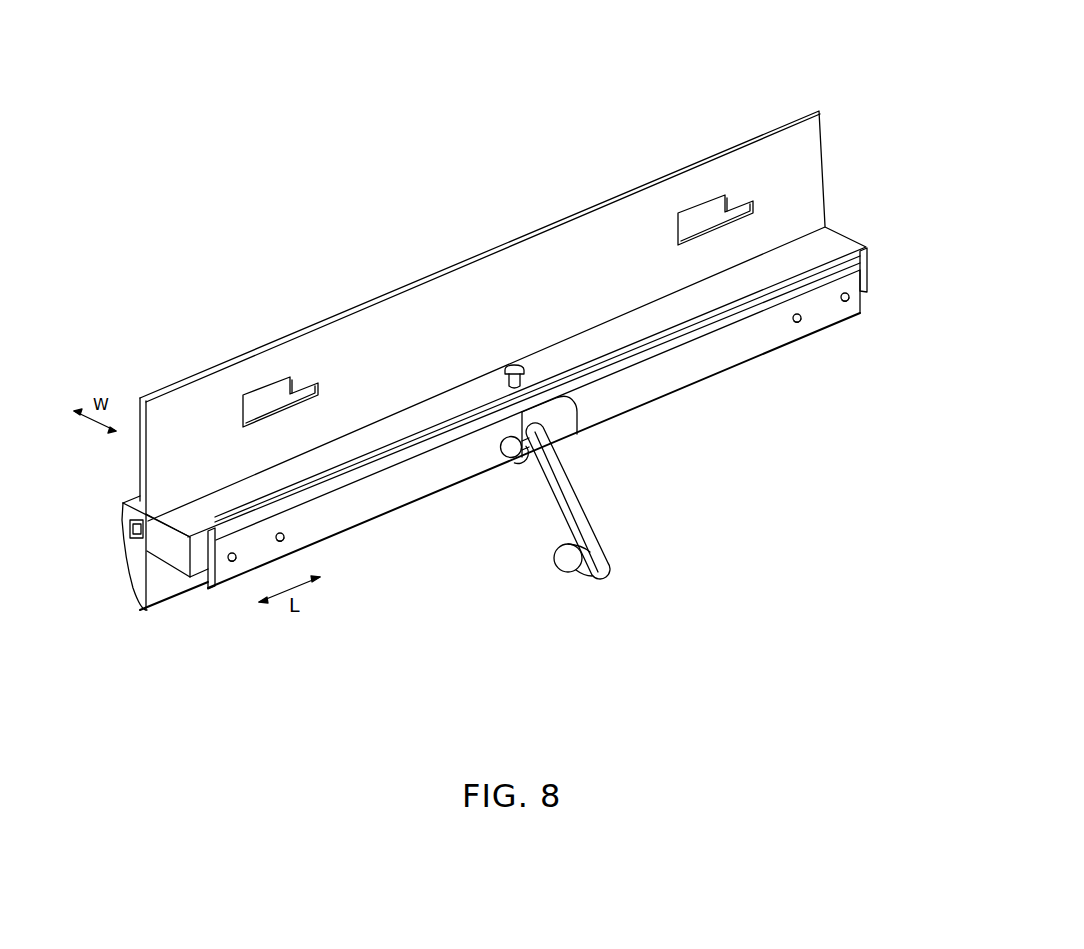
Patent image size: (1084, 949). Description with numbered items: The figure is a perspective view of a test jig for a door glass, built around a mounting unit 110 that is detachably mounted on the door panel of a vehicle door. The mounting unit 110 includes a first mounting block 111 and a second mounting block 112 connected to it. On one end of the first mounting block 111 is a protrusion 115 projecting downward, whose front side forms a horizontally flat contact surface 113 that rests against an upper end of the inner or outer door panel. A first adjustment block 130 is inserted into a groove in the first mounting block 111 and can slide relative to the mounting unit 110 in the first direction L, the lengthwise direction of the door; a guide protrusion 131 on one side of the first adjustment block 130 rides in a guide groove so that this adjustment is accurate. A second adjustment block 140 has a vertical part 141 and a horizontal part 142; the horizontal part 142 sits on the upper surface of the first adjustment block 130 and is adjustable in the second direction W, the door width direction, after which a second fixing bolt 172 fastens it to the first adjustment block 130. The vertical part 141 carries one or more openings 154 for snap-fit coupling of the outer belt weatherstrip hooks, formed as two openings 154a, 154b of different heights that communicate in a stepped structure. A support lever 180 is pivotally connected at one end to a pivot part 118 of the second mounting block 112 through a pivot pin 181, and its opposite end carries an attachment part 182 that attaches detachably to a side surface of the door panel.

The mounting unit 110 is at (452, 474).
The first mounting block 111 is at (128, 517).
The second mounting block 112 is at (232, 577).
The contact surface 113 is at (157, 606).
The protrusion 115 is at (135, 573).
The pivot part 118 is at (565, 440).
The first adjustment block 130 is at (180, 566).
The guide protrusion 131 is at (122, 540).
The second adjustment block 140 is at (552, 360).
The vertical part 141 is at (817, 187).
The horizontal part 142 is at (830, 240).
The openings 154 is at (486, 223).
The opening 154a is at (265, 402).
The opening 154b is at (309, 393).
The second fixing bolt 172 is at (512, 364).
The support lever 180 is at (575, 532).
The pivot pin 181 is at (510, 452).
The attachment part 182 is at (577, 570).